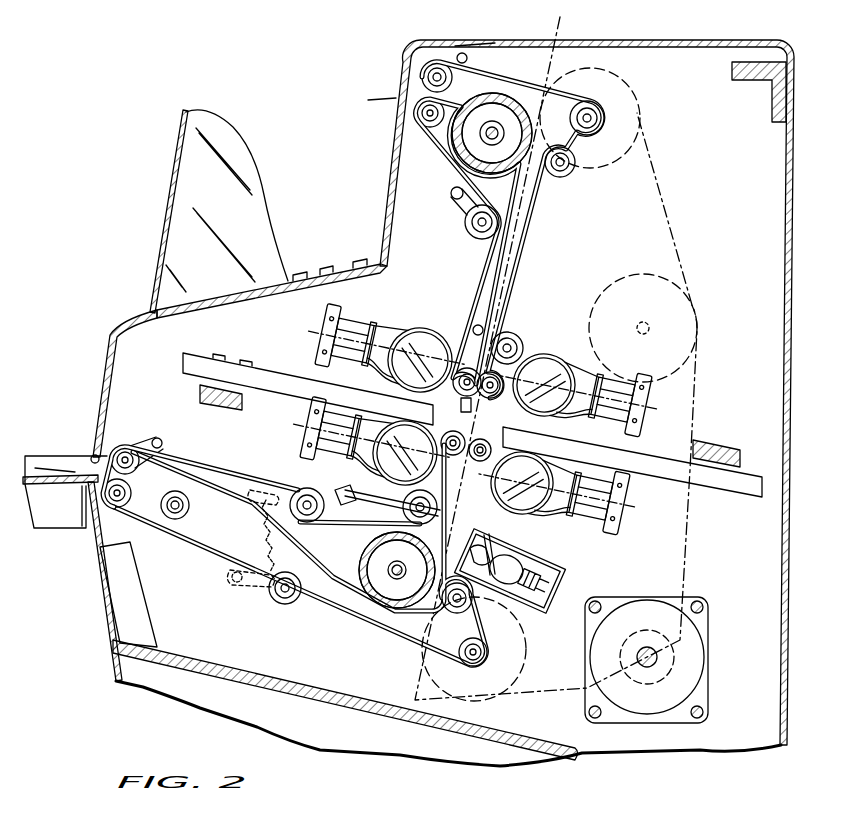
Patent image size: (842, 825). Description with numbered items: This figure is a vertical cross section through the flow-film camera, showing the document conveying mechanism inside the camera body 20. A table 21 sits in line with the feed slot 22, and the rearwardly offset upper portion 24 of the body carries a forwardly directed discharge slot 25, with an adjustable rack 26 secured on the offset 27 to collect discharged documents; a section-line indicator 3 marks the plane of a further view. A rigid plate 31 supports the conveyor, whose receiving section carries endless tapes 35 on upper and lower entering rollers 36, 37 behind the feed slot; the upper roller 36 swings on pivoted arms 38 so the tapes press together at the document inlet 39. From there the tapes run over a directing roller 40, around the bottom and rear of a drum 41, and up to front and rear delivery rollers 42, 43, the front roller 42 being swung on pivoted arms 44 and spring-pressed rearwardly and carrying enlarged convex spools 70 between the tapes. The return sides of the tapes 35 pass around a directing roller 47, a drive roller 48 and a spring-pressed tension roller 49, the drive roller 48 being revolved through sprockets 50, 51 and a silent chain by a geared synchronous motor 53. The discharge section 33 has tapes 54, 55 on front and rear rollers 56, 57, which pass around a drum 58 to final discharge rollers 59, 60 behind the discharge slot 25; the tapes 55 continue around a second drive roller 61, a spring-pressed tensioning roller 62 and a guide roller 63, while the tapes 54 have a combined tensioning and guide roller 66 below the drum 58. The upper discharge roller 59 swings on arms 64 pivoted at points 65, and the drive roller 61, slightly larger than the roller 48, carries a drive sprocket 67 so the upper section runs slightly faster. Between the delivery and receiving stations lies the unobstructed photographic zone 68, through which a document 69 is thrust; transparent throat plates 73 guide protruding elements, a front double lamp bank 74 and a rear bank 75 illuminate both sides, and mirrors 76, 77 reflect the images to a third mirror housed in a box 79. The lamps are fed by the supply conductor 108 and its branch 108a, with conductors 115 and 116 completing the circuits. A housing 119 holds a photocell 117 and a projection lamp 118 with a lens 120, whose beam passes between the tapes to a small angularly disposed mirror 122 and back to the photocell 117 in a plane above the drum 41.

The section line 3- 3 is at (570, 30).
The flow-film camera body 20 is at (98, 598).
The table 21 is at (70, 481).
The feed slot 22 is at (75, 465).
The upper portion of the body 24 is at (386, 201).
The discharge slot 25 is at (396, 98).
The adjustable rack 26 is at (208, 133).
The offset 27 is at (330, 268).
The rigid plate 31 is at (130, 330).
The discharge section 33 is at (478, 259).
The endless tapes 35 is at (200, 545).
The upper entering roller 36 is at (130, 447).
The lower entering roller 37 is at (125, 505).
The pivoted arms 38 is at (153, 441).
The document inlet 39 is at (93, 455).
The directing roller 40 is at (183, 511).
The drum 41 is at (360, 562).
The front delivery roller 42 is at (428, 438).
The rear delivery roller 43 is at (518, 475).
The pivoted arms 44 is at (445, 468).
The directing roller 47 is at (470, 608).
The drive roller 48 is at (488, 655).
The spring-pressed tension roller 49 is at (276, 603).
The sprocket 50 is at (527, 640).
The sprocket 51 is at (618, 653).
The geared synchronous motor 53 is at (664, 610).
The endless tapes 54 is at (478, 293).
The endless tapes 55 is at (516, 278).
The front roller 56 is at (452, 372).
The rear roller 57 is at (491, 392).
The drum 58 is at (462, 150).
The upper discharge roller 59 is at (410, 68).
The lower discharge roller 60 is at (418, 120).
The second drive roller 61 is at (595, 109).
The spring-pressed tensioning roller 62 is at (566, 178).
The guide roller 63 is at (514, 340).
The arms 64 is at (470, 44).
The pivot points 65 is at (468, 58).
The combined tensioning and guide roller 66 is at (468, 231).
The drive sprocket 67 is at (644, 112).
The photographic zone 68 is at (466, 412).
The document 69 is at (483, 436).
The enlarged convex spools 70 is at (474, 337).
The transparent plates 73 is at (463, 392).
The double bank of incandescent lamps 74 is at (396, 331).
The rear double bank of lamps 75 is at (553, 362).
The mirror 76 is at (278, 375).
The mirror 77 is at (755, 450).
The box 79 is at (448, 440).
The supply conductor 108 is at (326, 349).
The branch 108a is at (612, 413).
The conductor 115 is at (329, 326).
The common conductor 116 is at (632, 392).
The photocell 117 is at (478, 548).
The projection lamp 118 is at (522, 567).
The housing 119 is at (548, 580).
The lens 120 is at (492, 552).
The small angularly disposed mirror 122 is at (338, 492).